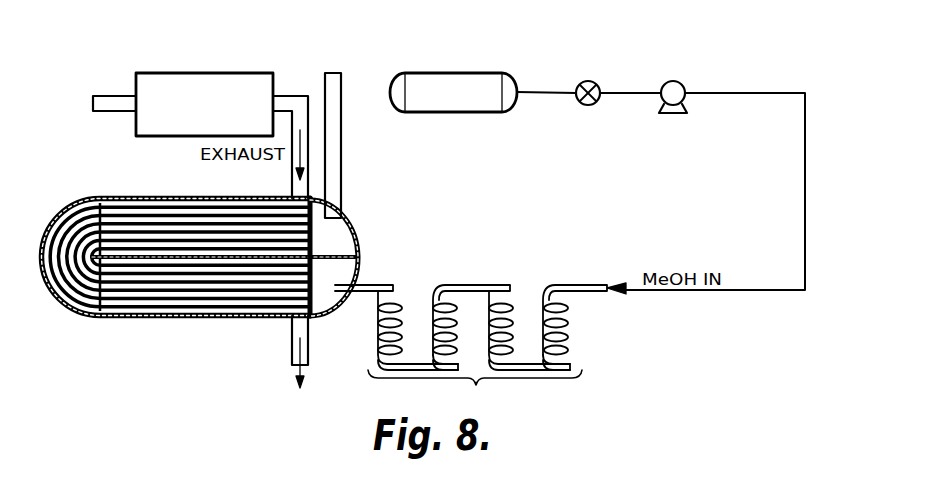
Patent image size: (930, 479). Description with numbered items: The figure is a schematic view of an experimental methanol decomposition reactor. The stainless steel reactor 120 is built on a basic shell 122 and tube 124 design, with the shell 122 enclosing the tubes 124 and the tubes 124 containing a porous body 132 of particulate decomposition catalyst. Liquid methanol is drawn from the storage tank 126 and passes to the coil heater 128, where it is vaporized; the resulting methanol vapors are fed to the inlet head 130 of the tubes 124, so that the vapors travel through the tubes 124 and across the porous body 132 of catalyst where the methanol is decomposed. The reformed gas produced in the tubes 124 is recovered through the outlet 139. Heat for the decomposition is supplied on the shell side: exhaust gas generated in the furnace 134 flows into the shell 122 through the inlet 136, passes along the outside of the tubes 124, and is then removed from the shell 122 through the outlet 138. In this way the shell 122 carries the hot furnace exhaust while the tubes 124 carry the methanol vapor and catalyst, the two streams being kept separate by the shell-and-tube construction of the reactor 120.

The stainless steel reactor 120 is at (226, 258).
The shell 122 is at (138, 322).
The tubes 124 is at (312, 246).
The storage tank 126 is at (445, 78).
The coil heater 128 is at (572, 340).
The inlet head 130 is at (345, 228).
The porous body 132 is at (135, 227).
The furnace 134 is at (191, 80).
The inlet 136 is at (292, 200).
The outlet 138 is at (290, 352).
The outlet 139 is at (335, 70).